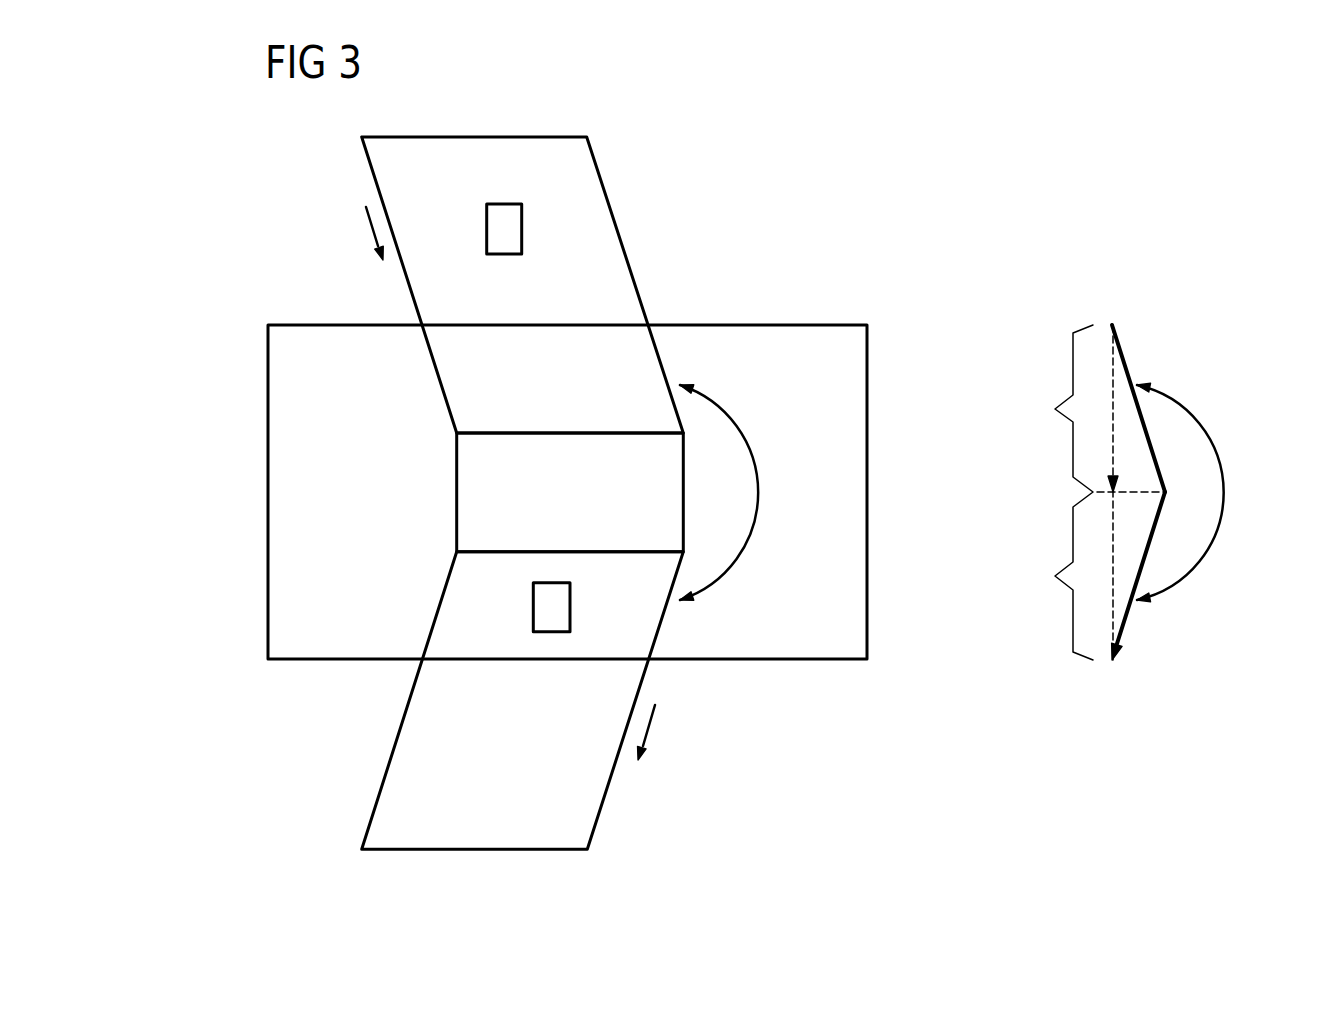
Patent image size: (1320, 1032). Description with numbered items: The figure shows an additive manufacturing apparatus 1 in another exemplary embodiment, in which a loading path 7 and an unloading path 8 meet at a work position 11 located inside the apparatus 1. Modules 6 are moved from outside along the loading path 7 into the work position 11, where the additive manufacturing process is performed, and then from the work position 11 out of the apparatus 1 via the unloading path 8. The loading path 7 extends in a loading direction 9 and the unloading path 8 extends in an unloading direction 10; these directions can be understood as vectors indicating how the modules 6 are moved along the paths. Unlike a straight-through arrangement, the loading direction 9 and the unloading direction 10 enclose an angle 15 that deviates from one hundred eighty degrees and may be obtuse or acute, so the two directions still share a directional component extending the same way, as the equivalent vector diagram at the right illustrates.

The apparatus 1 is at (776, 324).
The module 6 is at (533, 227).
The loading path 7 is at (477, 136).
The unloading path 8 is at (433, 617).
The loading direction 9 is at (367, 229).
The unloading direction 10 is at (648, 730).
The work position 11 is at (455, 493).
The angle 15 is at (758, 492).